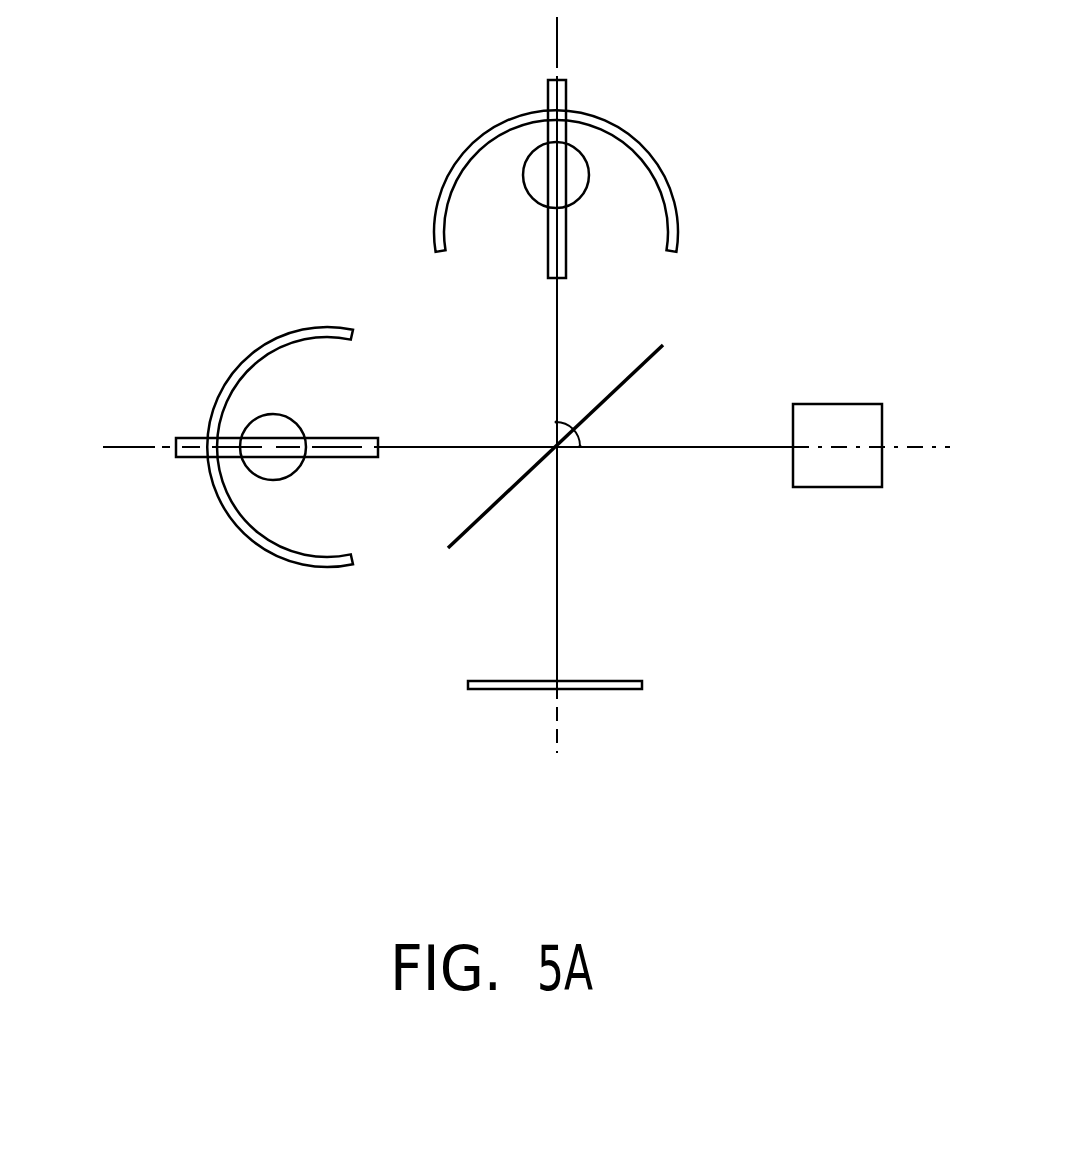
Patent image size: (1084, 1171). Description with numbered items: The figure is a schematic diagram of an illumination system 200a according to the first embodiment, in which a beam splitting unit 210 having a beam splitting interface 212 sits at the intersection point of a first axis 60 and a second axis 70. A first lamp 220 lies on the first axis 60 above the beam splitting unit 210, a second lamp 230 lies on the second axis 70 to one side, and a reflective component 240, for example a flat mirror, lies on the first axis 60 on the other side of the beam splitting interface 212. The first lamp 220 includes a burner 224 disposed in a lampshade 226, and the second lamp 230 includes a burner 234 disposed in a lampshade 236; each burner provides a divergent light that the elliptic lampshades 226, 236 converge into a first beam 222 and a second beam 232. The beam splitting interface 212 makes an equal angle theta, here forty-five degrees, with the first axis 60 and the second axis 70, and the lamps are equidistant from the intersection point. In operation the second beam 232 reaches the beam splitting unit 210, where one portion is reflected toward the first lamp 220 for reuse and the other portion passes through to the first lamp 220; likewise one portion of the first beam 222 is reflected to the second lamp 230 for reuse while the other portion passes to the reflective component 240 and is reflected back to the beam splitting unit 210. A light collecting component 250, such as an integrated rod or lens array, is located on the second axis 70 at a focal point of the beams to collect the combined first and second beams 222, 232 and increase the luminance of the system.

The first axis 60 is at (557, 40).
The second axis 70 is at (917, 445).
The illumination system 200a is at (503, 418).
The beam splitting unit 210 is at (628, 429).
The beam splitting interface 212 is at (663, 375).
The first lamp 220 is at (659, 179).
The first beam 222 is at (534, 304).
The burner 224 is at (573, 165).
The lampshade 226 is at (640, 143).
The second lamp 230 is at (217, 453).
The second beam 232 is at (414, 460).
The burner 234 is at (273, 458).
The lampshade 236 is at (252, 528).
The reflective component 240 is at (643, 684).
The light collecting component 250 is at (835, 472).